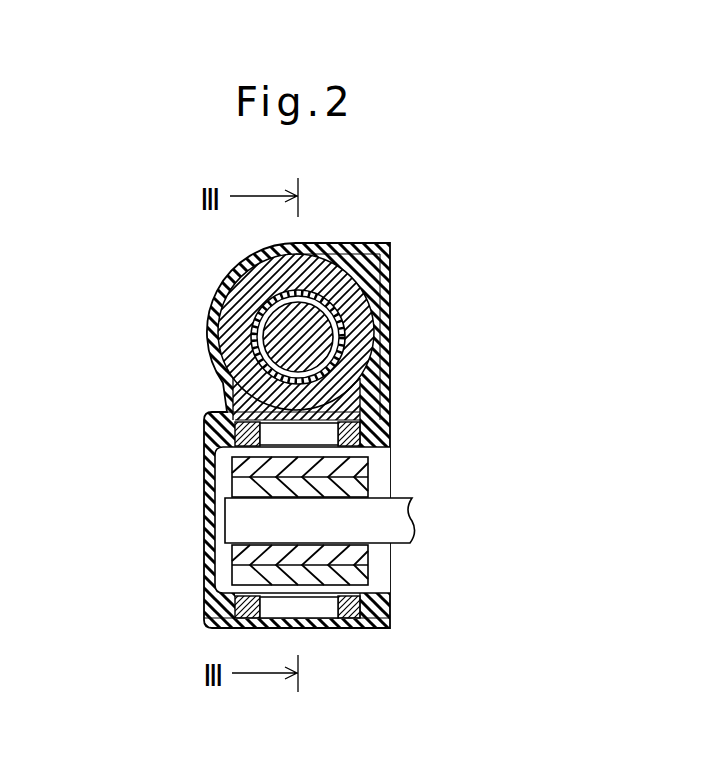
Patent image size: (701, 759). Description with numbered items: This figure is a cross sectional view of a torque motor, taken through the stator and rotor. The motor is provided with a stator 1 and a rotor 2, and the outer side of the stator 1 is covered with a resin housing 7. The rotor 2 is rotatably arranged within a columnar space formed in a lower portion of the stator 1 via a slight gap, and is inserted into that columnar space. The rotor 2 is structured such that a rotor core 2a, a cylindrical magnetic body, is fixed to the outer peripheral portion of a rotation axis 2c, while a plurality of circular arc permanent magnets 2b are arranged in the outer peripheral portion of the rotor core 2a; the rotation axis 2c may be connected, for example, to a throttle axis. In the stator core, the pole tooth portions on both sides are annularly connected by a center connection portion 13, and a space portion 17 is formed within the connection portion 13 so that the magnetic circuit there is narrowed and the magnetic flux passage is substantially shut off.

The stator 1 is at (427, 262).
The rotor 2 is at (318, 496).
The rotor core 2a is at (245, 487).
The circular arc permanent magnets 2b is at (363, 463).
The rotation axis 2c is at (383, 513).
The resin housing 7 is at (205, 430).
The center connection portion 13 is at (245, 425).
The space portion 17 is at (330, 430).